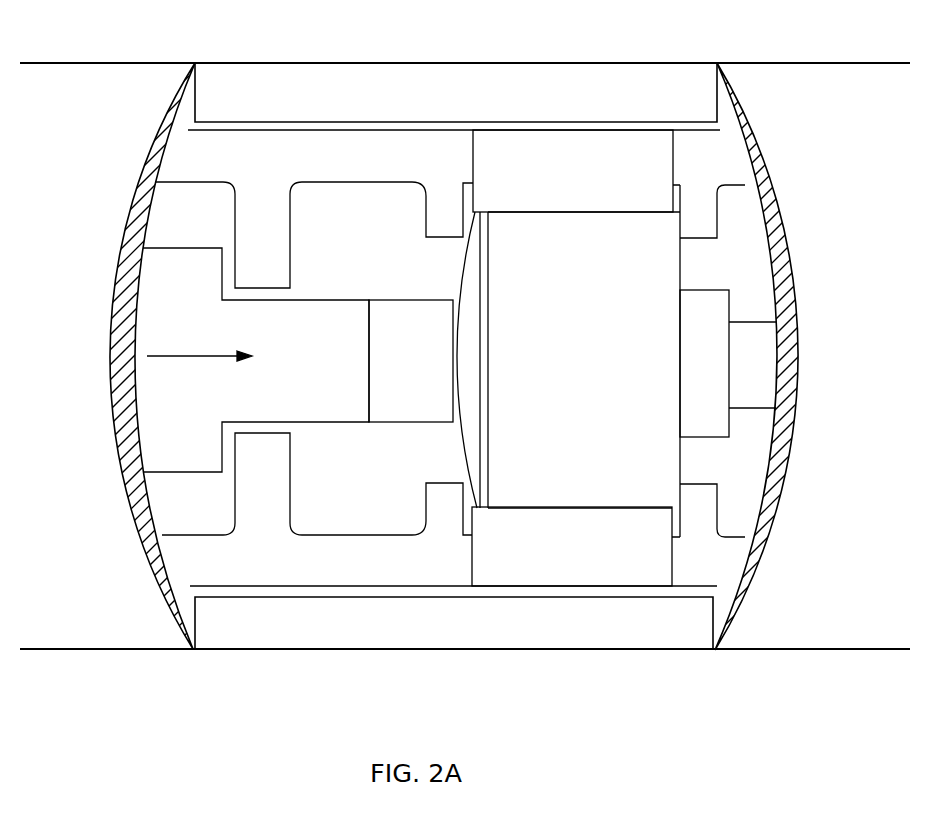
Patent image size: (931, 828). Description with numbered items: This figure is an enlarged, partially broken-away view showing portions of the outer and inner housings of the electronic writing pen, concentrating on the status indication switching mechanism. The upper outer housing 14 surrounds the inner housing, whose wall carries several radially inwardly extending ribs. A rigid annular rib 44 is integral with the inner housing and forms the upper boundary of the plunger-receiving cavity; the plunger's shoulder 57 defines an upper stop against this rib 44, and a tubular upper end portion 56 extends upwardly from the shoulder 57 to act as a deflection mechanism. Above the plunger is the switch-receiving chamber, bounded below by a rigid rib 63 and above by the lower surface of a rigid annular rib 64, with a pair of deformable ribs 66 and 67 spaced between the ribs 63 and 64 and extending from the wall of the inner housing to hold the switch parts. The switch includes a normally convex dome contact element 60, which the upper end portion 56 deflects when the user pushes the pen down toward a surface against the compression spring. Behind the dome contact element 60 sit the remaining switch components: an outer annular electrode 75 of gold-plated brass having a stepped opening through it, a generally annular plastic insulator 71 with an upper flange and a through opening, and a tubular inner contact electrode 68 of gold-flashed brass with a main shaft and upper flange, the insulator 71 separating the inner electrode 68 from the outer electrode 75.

The upper outer housing 14 is at (528, 103).
The rigid annular rib 44 is at (272, 243).
The tubular upper end portion 56 is at (418, 361).
The shoulder 57 is at (222, 462).
The dome contact element 60 is at (470, 296).
The rigid rib 63 is at (457, 202).
The rigid annular rib 64 is at (712, 207).
The deformable rib 66 is at (555, 164).
The deformable rib 67 is at (565, 545).
The tubular inner contact electrode 68 is at (765, 377).
The annular insulator 71 is at (714, 370).
The outer annular electrode 75 is at (576, 361).